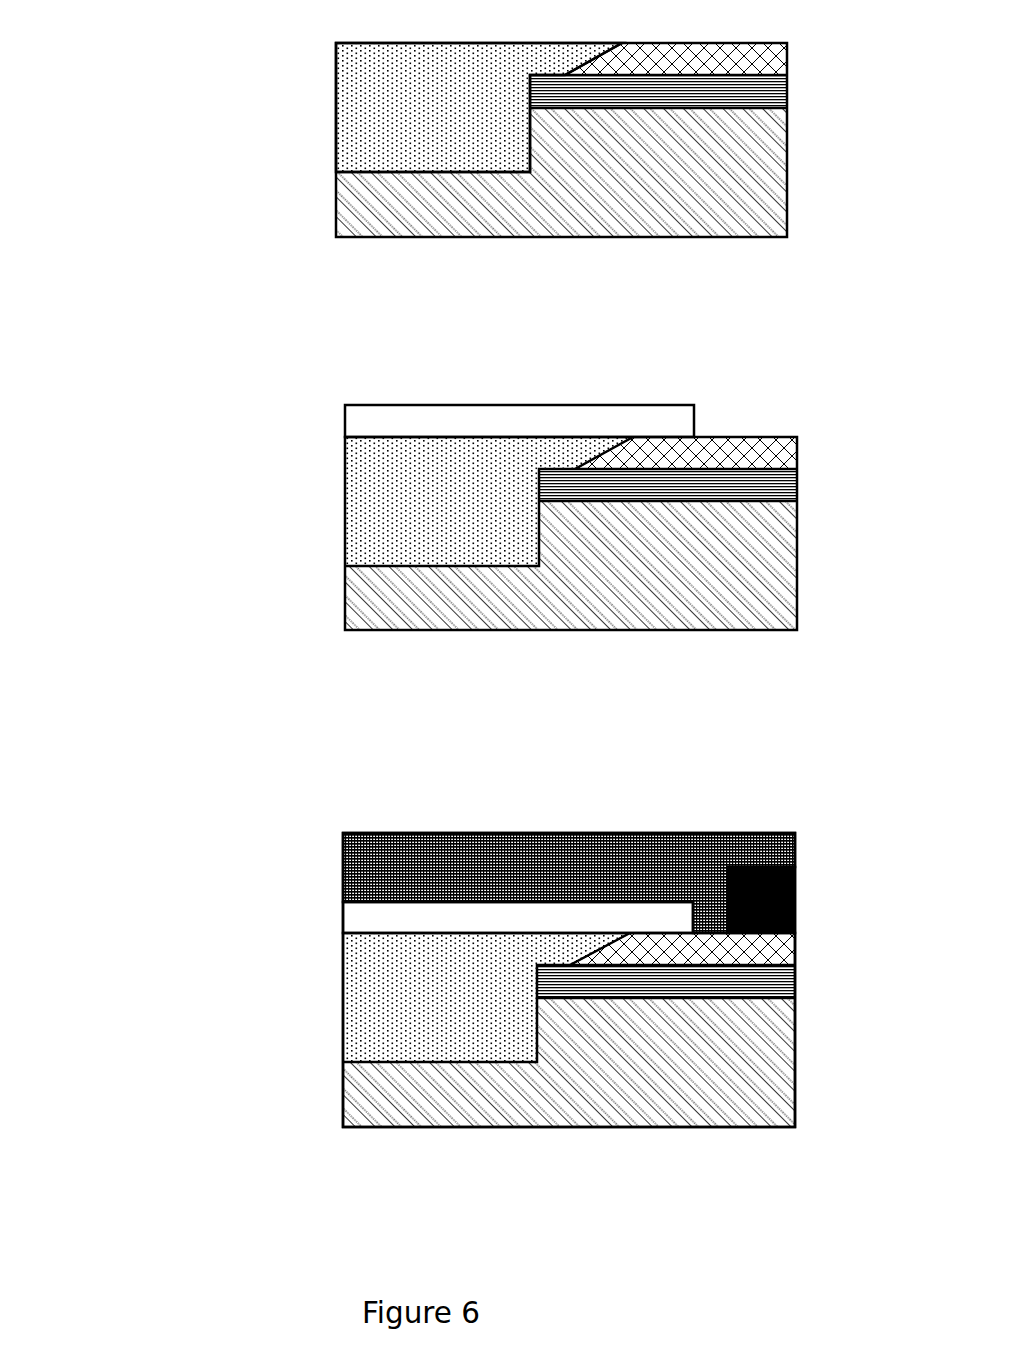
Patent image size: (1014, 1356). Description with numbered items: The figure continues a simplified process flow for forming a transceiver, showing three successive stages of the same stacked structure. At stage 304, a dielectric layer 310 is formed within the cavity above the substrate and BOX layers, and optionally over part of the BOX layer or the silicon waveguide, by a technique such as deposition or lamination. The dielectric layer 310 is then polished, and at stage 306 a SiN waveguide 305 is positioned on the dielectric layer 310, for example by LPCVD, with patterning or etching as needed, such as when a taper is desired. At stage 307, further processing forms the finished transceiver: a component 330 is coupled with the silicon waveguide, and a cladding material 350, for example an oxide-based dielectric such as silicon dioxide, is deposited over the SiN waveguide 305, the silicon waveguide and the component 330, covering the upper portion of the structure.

The process flow stage 304 is at (415, 132).
The dielectric layer 310 is at (372, 55).
The process flow stage 306 is at (425, 509).
The SiN waveguide 305 is at (390, 418).
The process flow stage 307 is at (485, 978).
The cladding material 350 is at (367, 858).
The component 330 is at (796, 876).